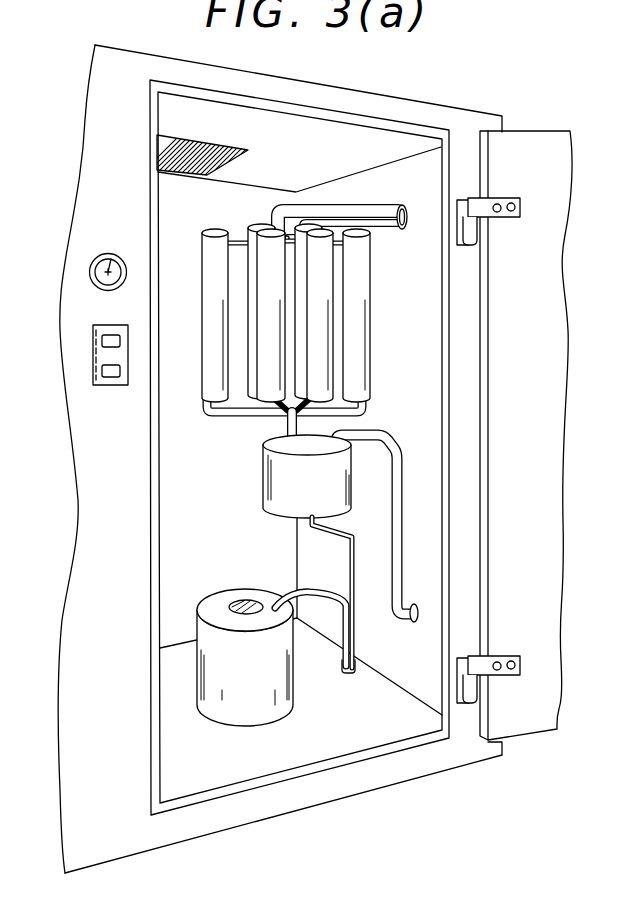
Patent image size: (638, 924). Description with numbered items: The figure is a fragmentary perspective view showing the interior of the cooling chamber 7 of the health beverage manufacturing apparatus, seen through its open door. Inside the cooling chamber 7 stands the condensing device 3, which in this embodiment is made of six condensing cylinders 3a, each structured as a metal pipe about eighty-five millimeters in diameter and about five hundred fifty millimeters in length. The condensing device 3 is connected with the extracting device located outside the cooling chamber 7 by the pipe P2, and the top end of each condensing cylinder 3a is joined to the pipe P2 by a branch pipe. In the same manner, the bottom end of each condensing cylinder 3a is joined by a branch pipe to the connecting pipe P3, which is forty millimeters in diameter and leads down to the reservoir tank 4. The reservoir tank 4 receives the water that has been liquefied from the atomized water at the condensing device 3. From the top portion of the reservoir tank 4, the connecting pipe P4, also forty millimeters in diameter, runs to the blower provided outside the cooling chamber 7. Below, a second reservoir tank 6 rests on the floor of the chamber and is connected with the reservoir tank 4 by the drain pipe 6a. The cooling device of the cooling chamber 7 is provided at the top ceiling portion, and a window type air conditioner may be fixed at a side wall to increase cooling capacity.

The cooling chamber 7 is at (83, 462).
The condensing device 3 is at (191, 392).
The condensing cylinder 3a is at (263, 303).
The pipe P2 is at (340, 210).
The connecting pipe P3 is at (283, 430).
The connecting pipe P4 is at (397, 478).
The reservoir tank 4 is at (263, 487).
The second reservoir tank 6 is at (207, 679).
The drain pipe 6a is at (350, 603).